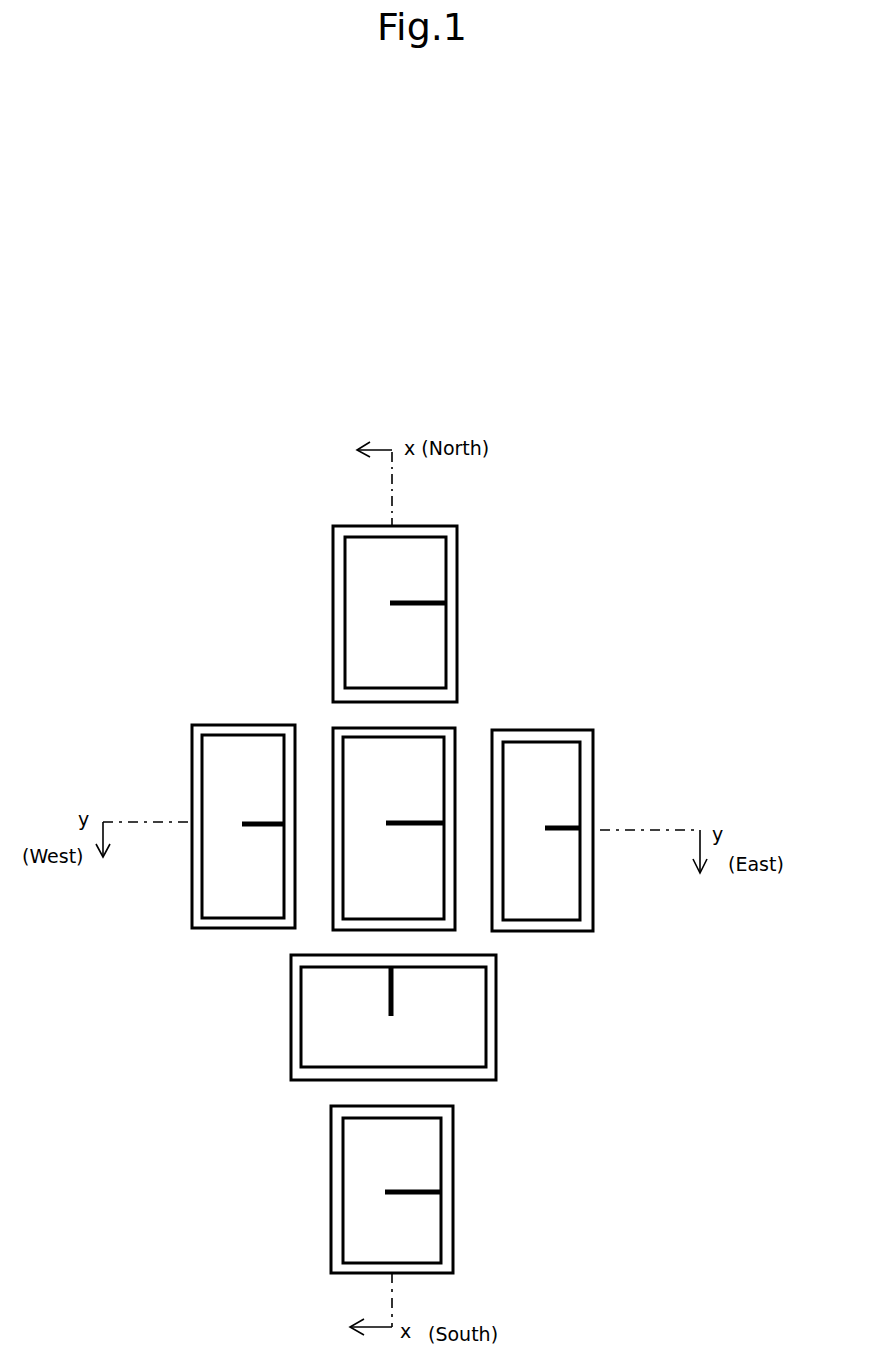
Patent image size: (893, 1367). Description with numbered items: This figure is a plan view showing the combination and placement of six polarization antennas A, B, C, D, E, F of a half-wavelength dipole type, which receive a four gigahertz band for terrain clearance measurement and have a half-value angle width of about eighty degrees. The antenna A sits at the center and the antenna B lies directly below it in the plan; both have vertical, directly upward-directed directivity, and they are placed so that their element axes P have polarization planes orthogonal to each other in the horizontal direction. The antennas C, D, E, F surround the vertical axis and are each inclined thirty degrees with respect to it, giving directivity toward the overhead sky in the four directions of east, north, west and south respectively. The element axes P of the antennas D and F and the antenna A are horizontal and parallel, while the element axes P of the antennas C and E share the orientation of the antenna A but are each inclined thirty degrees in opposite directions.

The polarization antenna A is at (418, 778).
The polarization antenna B is at (441, 1020).
The polarization antenna C is at (563, 790).
The polarization antenna D is at (420, 575).
The polarization antenna E is at (243, 773).
The polarization antenna F is at (420, 1172).
The element axis P is at (422, 600).